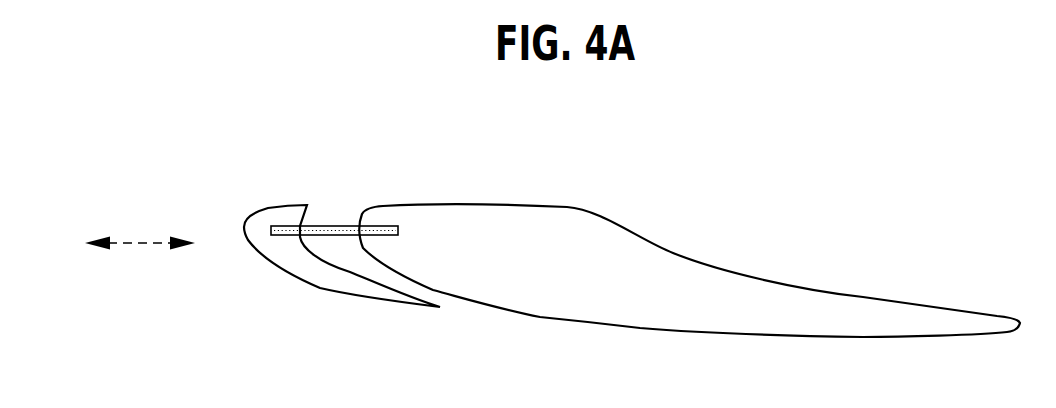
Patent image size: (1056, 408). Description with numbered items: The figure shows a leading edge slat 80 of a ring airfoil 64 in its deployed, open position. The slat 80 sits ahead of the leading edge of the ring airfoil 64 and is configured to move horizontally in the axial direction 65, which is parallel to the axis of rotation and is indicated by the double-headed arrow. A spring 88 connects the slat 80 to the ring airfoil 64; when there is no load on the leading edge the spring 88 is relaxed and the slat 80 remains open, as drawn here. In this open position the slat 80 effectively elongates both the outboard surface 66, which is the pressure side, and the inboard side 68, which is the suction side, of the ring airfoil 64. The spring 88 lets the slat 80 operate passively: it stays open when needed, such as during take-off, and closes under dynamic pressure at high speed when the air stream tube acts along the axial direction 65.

The ring airfoil 64 is at (548, 172).
The axial direction 65 is at (142, 238).
The outboard surface 66 is at (730, 336).
The inboard side 68 is at (778, 280).
The slat 80 is at (280, 170).
The spring 88 is at (328, 226).